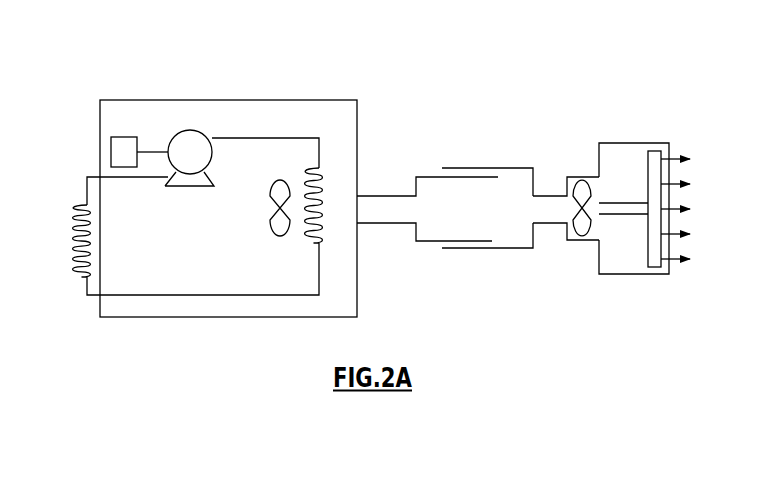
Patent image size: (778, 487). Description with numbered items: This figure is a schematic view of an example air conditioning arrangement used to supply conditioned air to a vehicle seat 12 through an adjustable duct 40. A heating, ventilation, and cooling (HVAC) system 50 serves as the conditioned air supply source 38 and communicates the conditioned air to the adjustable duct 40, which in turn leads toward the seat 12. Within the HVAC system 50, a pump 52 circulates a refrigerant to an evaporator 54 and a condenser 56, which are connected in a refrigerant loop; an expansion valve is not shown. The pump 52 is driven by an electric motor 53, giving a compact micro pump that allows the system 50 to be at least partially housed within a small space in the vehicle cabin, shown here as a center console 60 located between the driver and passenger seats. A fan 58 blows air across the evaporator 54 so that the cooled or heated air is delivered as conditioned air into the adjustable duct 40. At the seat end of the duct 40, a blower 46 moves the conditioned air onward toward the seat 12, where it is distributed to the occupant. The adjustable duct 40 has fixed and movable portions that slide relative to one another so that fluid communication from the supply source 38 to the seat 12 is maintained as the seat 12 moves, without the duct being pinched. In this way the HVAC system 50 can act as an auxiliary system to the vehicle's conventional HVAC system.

The vehicle seat 12 is at (636, 123).
The conditioned air supply source 38 is at (266, 50).
The adjustable duct 40 is at (484, 150).
The blower 46 is at (578, 236).
The HVAC system 50 is at (389, 118).
The pump 52 is at (195, 142).
The electric motor 53 is at (124, 137).
The evaporator 54 is at (306, 178).
The condenser 56 is at (78, 280).
The fan 58 is at (280, 240).
The center console 60 is at (302, 100).